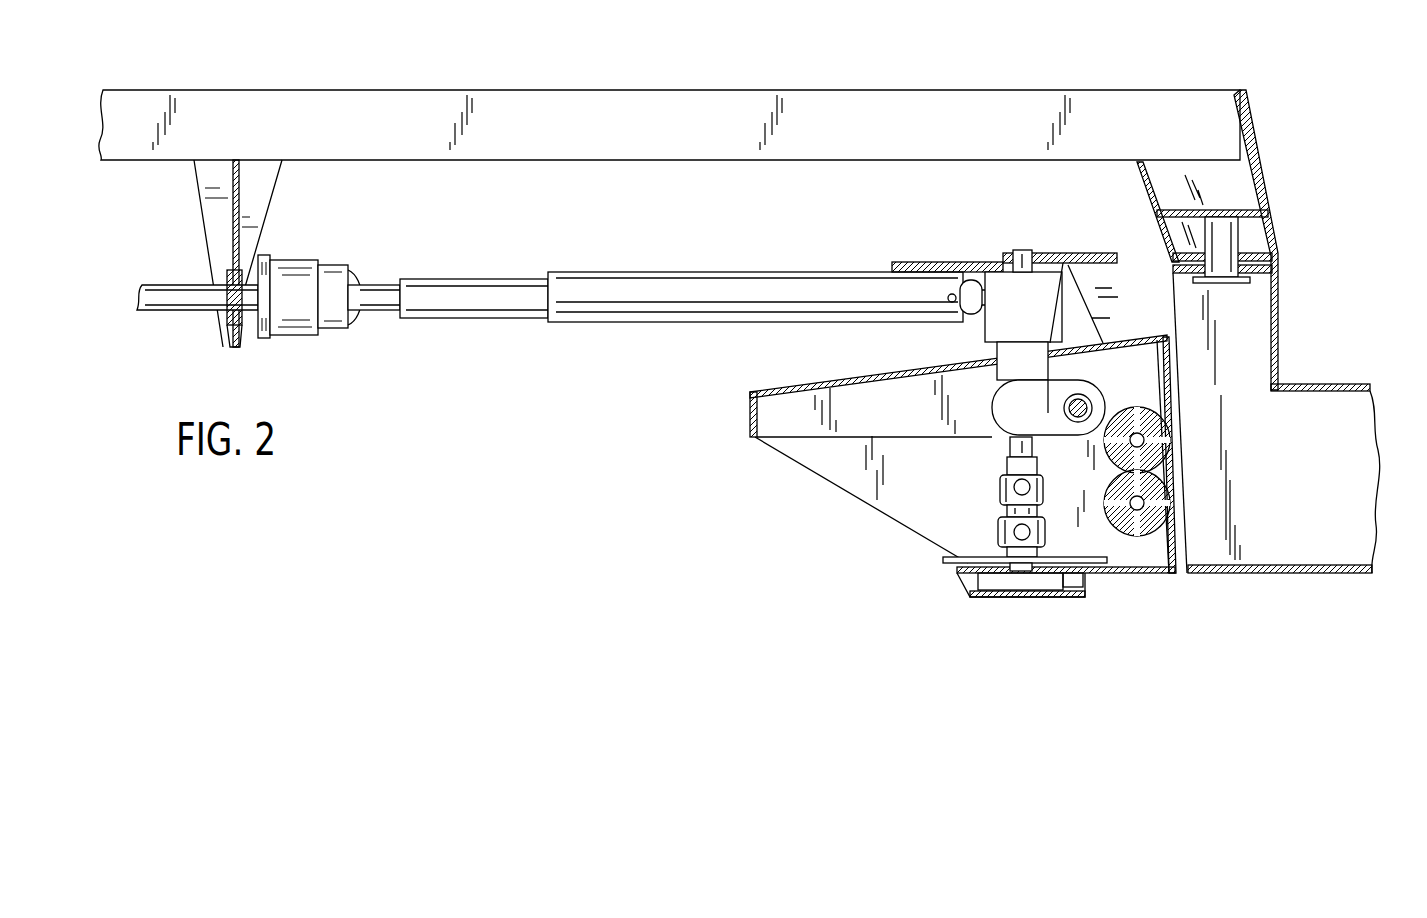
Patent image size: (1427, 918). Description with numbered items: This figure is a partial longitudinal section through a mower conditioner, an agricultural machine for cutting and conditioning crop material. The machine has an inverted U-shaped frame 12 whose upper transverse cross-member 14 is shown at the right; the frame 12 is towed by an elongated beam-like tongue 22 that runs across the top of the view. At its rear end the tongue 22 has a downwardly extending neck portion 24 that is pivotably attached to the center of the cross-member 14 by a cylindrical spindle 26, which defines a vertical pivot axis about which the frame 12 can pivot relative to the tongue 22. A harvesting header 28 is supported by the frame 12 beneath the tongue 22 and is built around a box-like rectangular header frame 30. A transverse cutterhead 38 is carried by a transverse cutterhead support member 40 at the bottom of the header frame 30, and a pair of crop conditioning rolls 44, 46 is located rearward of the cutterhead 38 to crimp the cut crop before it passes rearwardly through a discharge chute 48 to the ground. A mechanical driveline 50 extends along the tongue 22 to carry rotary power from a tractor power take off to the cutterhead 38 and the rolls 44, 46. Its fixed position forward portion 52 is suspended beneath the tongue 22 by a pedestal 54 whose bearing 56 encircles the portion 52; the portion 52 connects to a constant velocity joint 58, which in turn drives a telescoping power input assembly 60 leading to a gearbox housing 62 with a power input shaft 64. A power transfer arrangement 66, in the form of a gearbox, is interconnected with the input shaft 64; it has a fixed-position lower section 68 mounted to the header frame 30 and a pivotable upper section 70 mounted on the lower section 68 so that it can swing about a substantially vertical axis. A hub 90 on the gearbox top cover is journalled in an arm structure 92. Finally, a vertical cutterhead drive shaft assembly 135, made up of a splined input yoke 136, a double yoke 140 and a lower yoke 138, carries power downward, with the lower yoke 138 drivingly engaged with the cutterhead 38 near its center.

The frame 12 is at (1270, 331).
The upper transverse cross-member 14 is at (1278, 292).
The tongue 22 is at (668, 90).
The neck portion 24 is at (1255, 164).
The cylindrical spindle 26 is at (1243, 231).
The harvesting header 28 is at (914, 454).
The header frame 30 is at (772, 392).
The cutterhead 38 is at (963, 544).
The cutterhead support member 40 is at (1012, 599).
The crop conditioning roll 44 is at (1137, 407).
The crop conditioning roll 46 is at (1153, 537).
The discharge chute 48 is at (1348, 389).
The mechanical driveline 50 is at (441, 330).
The fixed position forward portion 52 is at (168, 312).
The pedestal 54 is at (271, 198).
The bearing 56 is at (225, 322).
The constant velocity joint 58 is at (293, 339).
The telescoping power input assembly 60 is at (671, 254).
The gearbox housing 62 is at (947, 261).
The power input shaft 64 is at (981, 271).
The power transfer arrangement 66 is at (932, 414).
The lower section 68 is at (1073, 371).
The upper section 70 is at (1075, 305).
The hub 90 is at (1022, 249).
The arm structure 92 is at (1072, 247).
The cutterhead drive shaft assembly 135 is at (990, 504).
The splined input yoke 136 is at (1008, 447).
The lower yoke 138 is at (1050, 550).
The double yoke 140 is at (1046, 511).